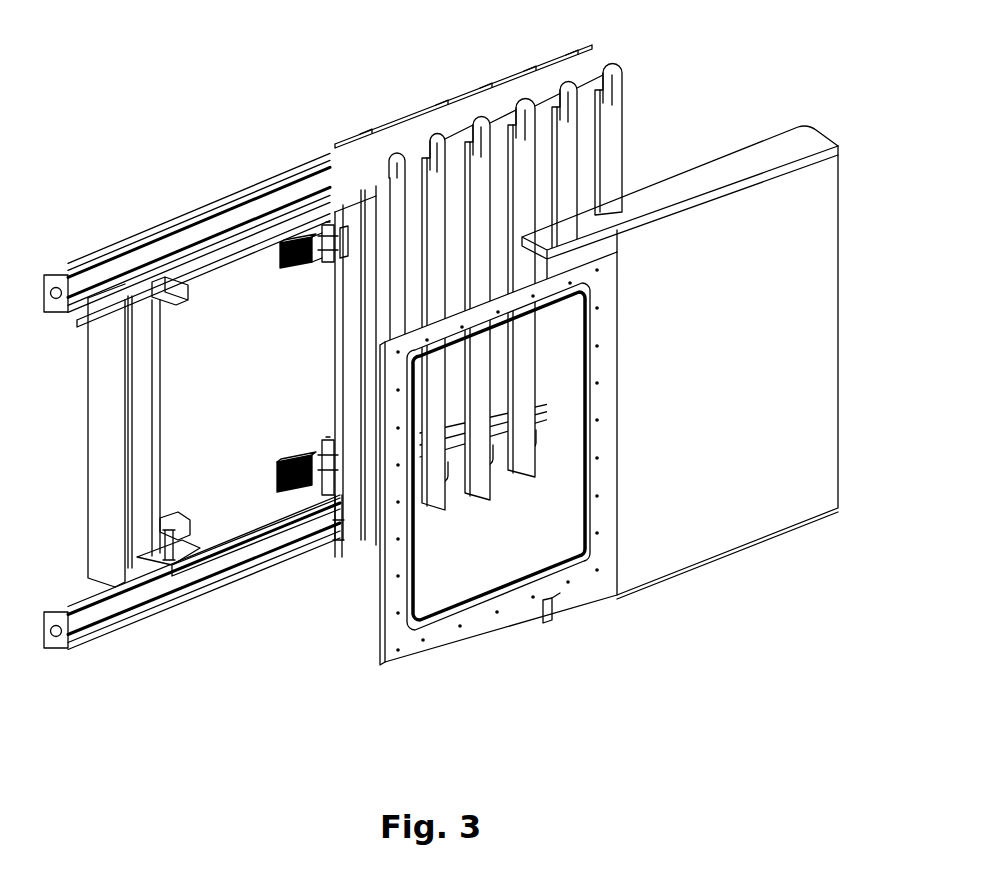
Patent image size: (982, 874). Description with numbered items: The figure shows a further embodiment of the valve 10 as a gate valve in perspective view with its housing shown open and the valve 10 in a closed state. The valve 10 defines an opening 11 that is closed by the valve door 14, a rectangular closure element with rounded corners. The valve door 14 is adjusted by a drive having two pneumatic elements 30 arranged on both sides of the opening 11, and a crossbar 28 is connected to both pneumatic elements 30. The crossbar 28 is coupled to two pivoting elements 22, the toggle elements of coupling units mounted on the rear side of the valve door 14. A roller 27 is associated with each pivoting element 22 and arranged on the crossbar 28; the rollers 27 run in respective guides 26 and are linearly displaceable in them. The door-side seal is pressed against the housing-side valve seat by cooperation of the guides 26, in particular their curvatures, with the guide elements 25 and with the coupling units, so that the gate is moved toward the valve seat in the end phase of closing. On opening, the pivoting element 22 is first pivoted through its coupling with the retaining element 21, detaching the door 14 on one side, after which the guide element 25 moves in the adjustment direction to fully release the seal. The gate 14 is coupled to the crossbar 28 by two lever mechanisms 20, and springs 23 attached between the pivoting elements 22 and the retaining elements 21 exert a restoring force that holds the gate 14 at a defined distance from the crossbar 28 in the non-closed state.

The valve 10 is at (711, 56).
The opening 11 is at (506, 540).
The valve door 14 is at (260, 396).
The lever mechanism 20 is at (287, 452).
The retaining element 21 is at (302, 207).
The pivoting element 22 is at (320, 172).
The spring 23 is at (328, 185).
The guide element 25 is at (152, 263).
The guide 26 is at (247, 532).
The roller 27 is at (334, 512).
The crossbar 28 is at (342, 283).
The pneumatic element 30 is at (198, 227).